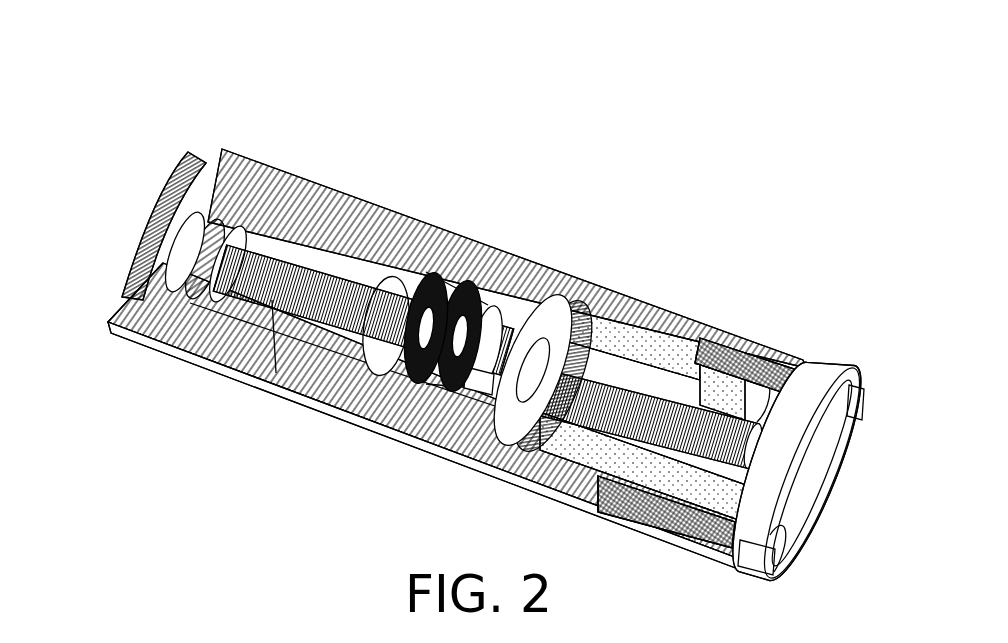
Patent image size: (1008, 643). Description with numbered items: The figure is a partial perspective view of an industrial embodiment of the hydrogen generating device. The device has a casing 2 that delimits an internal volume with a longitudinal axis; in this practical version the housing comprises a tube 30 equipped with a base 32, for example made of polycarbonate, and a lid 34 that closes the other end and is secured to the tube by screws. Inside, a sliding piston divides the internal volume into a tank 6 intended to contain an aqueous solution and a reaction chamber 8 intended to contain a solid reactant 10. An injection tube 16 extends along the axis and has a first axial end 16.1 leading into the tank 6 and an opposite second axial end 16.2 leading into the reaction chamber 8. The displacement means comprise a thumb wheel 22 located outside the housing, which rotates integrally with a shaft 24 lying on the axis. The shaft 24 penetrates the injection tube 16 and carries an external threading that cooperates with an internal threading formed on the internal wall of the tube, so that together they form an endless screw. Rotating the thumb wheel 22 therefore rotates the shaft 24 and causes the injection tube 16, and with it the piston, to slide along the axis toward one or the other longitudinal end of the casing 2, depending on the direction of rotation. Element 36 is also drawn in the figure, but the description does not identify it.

The casing 2 is at (462, 354).
The tank 6 is at (356, 200).
The reaction chamber 8 is at (806, 473).
The solid reactant 10 is at (673, 538).
The injection tube 16 is at (663, 400).
The first axial end 16.1 is at (390, 346).
The second axial end 16.2 is at (767, 360).
The thumb wheel 22 is at (160, 200).
The shaft 24 is at (394, 346).
The tube 30 is at (108, 321).
The base 32 is at (108, 312).
The lid 34 is at (807, 494).
The damping element 36 is at (538, 414).